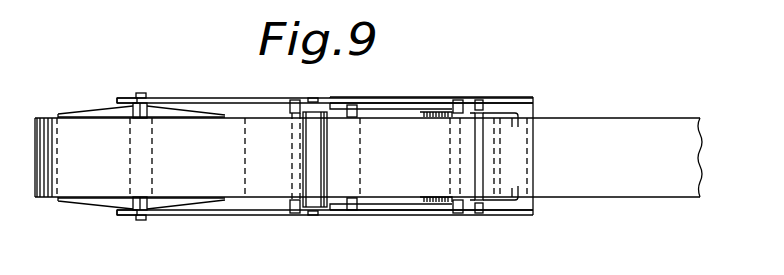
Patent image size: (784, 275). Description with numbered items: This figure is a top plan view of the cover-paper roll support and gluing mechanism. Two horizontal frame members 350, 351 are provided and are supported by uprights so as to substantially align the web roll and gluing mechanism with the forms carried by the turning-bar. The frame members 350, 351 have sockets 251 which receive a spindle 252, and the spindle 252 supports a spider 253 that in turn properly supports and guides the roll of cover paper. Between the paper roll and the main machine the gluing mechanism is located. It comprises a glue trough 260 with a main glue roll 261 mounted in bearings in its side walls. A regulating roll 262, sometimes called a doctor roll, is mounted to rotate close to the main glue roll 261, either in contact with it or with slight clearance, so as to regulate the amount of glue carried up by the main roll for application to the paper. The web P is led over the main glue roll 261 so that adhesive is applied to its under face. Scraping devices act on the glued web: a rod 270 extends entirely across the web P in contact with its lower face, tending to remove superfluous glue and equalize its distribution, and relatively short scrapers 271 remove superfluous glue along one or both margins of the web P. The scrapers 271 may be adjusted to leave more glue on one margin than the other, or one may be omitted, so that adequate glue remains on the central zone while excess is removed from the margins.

The spider 253 is at (80, 116).
The socket 251 is at (136, 98).
The spindle 252 is at (147, 100).
The horizontal frame member 351 is at (226, 98).
The horizontal frame member 350 is at (258, 215).
The regulating roll 262 is at (352, 105).
The glue trough 260 is at (387, 103).
The main glue roll 261 is at (390, 204).
The web P is at (338, 190).
The rod 270 is at (493, 170).
The scraper 271 is at (518, 203).